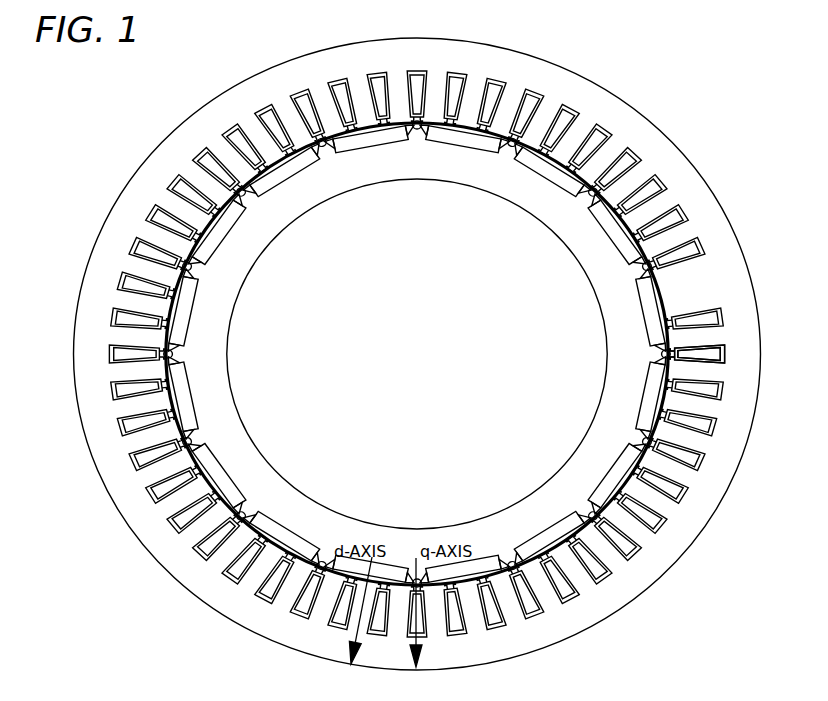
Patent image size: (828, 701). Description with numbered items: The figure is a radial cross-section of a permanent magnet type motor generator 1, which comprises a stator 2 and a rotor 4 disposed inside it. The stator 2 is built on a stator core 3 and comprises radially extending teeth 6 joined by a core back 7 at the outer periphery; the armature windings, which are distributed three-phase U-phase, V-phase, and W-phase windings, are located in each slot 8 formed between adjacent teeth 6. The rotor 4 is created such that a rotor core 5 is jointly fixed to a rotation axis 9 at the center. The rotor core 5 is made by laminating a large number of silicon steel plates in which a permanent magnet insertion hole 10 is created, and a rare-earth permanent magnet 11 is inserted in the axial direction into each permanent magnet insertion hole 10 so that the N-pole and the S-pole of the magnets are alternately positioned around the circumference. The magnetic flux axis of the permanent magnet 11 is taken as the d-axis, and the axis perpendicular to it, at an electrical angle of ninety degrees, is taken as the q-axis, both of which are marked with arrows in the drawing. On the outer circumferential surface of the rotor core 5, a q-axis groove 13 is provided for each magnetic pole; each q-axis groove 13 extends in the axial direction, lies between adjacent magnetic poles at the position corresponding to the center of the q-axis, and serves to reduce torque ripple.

The permanent magnet type motor generator 1 is at (662, 92).
The stator 2 is at (703, 171).
The stator core 3 is at (172, 178).
The rotor 4 is at (623, 327).
The rotor core 5 is at (225, 462).
The teeth 6 is at (473, 97).
The core back 7 is at (398, 63).
The slot 8 is at (268, 112).
The rotation axis 9 is at (325, 318).
The permanent magnet insertion hole 10 is at (183, 405).
The permanent magnet 11 is at (277, 533).
The q-axis groove 13 is at (418, 128).